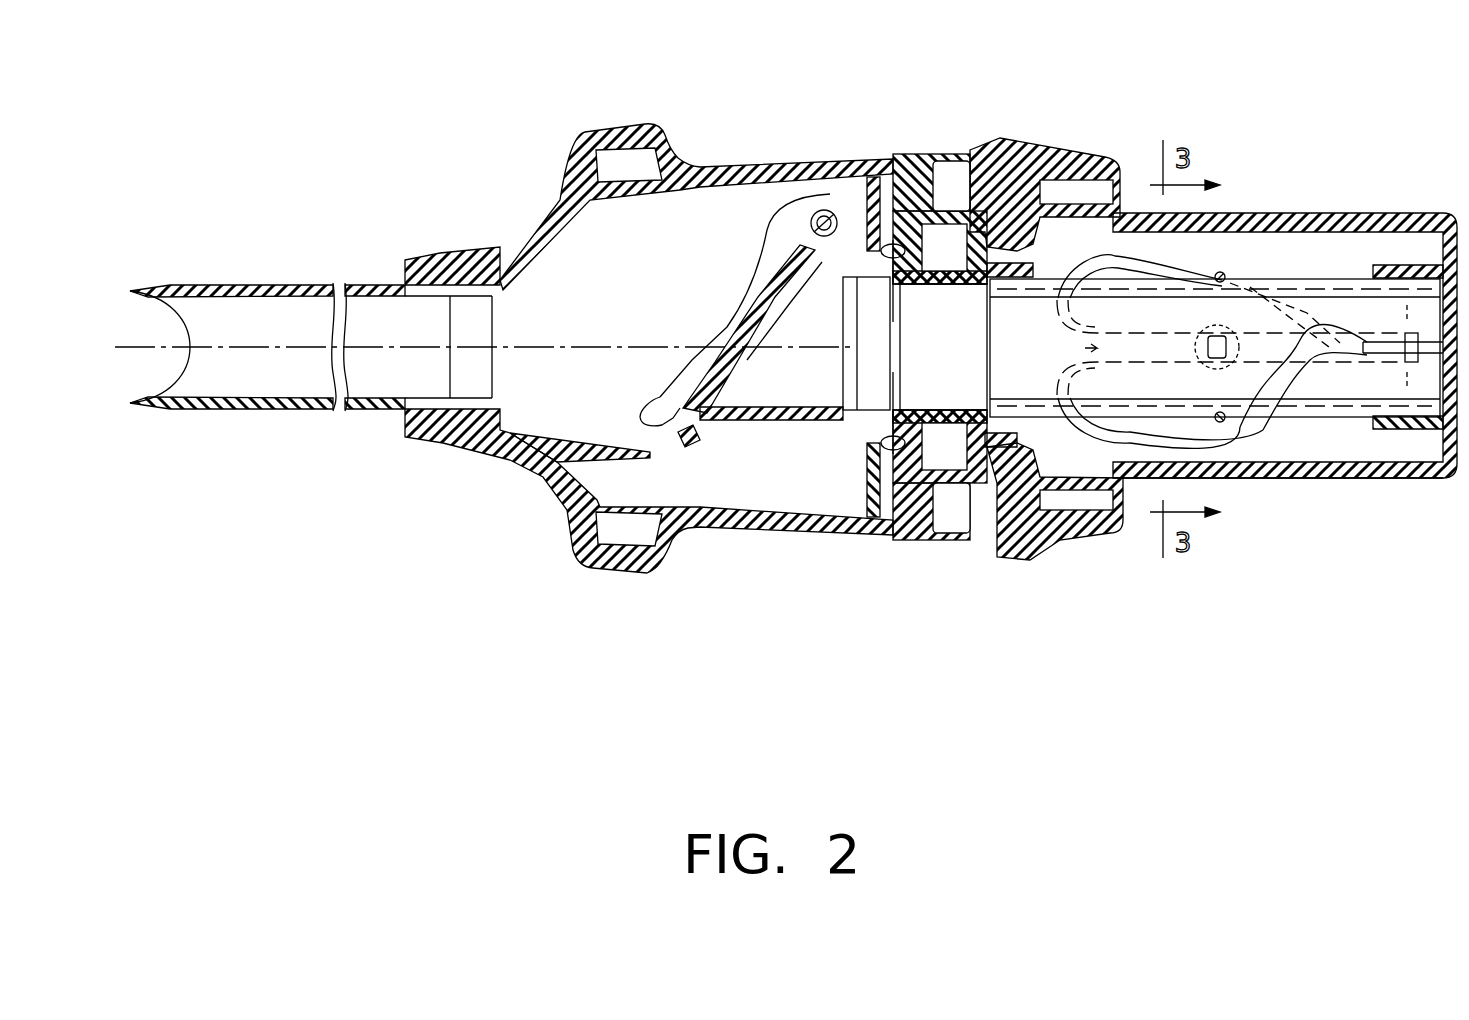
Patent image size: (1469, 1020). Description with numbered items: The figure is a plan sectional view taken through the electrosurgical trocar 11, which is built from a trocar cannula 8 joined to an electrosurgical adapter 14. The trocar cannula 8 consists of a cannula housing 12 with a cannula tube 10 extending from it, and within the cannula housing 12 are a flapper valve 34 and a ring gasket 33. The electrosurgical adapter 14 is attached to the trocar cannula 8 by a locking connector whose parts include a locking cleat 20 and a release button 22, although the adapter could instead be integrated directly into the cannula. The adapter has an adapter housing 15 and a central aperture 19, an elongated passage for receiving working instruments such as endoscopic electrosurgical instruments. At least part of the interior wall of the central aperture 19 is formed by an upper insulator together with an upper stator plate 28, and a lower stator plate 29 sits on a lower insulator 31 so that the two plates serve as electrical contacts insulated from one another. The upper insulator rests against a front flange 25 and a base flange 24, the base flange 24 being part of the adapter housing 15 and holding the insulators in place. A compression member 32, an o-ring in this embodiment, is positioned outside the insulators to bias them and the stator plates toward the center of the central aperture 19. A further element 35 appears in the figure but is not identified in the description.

The trocar cannula 8 is at (484, 176).
The cannula tube 10 is at (263, 285).
The electrosurgical trocar 11 is at (845, 131).
The cannula housing 12 is at (608, 128).
The electrosurgical adapter 14 is at (1323, 452).
The adapter housing 15 is at (1258, 478).
The central aperture 19 is at (1025, 300).
The locking cleat 20 is at (935, 200).
The release button 22 is at (1072, 162).
The base flange 24 is at (1385, 268).
The front flange 25 is at (1028, 270).
The upper stator plate 28 is at (1322, 400).
The lower stator plate 29 is at (1304, 282).
The lower insulator 31 is at (988, 308).
The compression member 32 is at (1222, 277).
The ring gasket 33 is at (890, 312).
The flapper valve 34 is at (645, 404).
The lever 35 is at (772, 206).